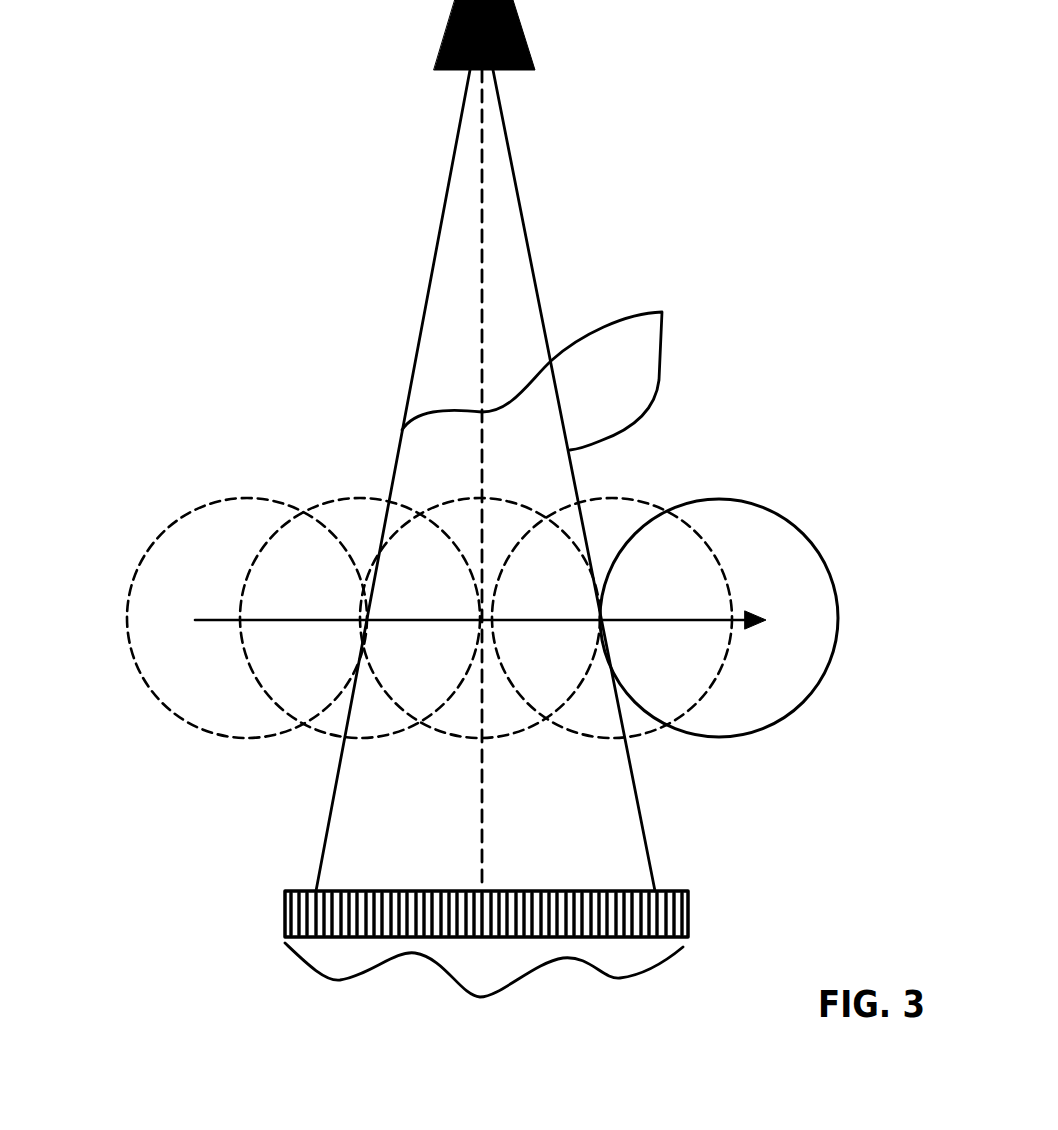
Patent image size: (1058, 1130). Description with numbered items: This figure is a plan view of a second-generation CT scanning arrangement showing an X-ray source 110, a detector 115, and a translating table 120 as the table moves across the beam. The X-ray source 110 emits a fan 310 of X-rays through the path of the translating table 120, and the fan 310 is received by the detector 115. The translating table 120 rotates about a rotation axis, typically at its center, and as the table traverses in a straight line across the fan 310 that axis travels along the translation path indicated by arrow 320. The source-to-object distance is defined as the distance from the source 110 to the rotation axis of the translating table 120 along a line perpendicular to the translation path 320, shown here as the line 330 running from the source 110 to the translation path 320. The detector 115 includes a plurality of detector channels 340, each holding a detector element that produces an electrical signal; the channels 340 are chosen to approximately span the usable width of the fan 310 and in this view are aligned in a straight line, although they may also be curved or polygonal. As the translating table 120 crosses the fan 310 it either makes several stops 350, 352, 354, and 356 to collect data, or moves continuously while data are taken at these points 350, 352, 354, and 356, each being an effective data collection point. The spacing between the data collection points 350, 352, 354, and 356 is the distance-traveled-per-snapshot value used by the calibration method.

The X-ray source 110 is at (522, 35).
The detector 115 is at (232, 940).
The translating table 120 is at (838, 618).
The fan of X-rays 310 is at (567, 373).
The translation path 320 is at (195, 626).
The line perpendicular to the translation path 330 is at (480, 342).
The detector channels 340 is at (484, 994).
The data collection point 350 is at (160, 522).
The data collection point 352 is at (357, 498).
The data collection point 354 is at (500, 735).
The data collection point 356 is at (620, 487).